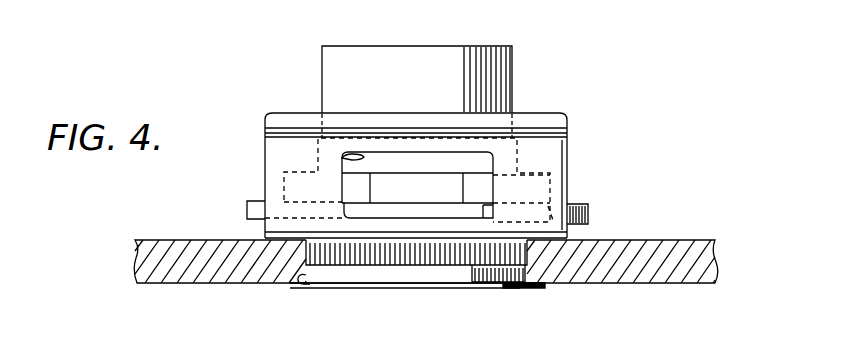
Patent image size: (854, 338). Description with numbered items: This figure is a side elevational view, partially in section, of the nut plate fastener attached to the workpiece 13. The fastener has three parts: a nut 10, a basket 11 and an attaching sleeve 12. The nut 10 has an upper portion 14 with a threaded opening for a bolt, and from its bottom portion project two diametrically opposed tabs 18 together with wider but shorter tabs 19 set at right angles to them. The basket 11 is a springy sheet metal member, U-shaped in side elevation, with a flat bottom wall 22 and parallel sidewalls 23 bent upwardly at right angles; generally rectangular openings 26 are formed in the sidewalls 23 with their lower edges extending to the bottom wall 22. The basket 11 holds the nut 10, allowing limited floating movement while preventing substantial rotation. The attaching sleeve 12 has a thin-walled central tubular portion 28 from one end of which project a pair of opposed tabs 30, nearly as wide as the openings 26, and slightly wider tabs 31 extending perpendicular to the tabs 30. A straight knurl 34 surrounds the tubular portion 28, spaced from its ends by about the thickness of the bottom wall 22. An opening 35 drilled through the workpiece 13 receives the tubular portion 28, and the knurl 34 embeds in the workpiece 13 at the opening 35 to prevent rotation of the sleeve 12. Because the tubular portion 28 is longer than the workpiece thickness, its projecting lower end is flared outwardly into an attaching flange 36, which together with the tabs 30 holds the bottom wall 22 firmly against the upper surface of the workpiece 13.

The nut 10 is at (528, 62).
The basket 11 is at (266, 110).
The attaching sleeve 12 is at (405, 289).
The workpiece 13 is at (675, 242).
The upper portion 14 is at (512, 90).
The tabs 18 is at (440, 178).
The tabs 19 is at (284, 182).
The bottom wall 22 is at (560, 203).
The sidewalls 23 is at (562, 157).
The openings 26 is at (342, 158).
The tubular portion 28 is at (372, 272).
The tabs 30 is at (402, 211).
The tabs 31 is at (247, 211).
The straight knurl 34 is at (462, 258).
The opening 35 is at (308, 284).
The attaching flange 36 is at (521, 284).